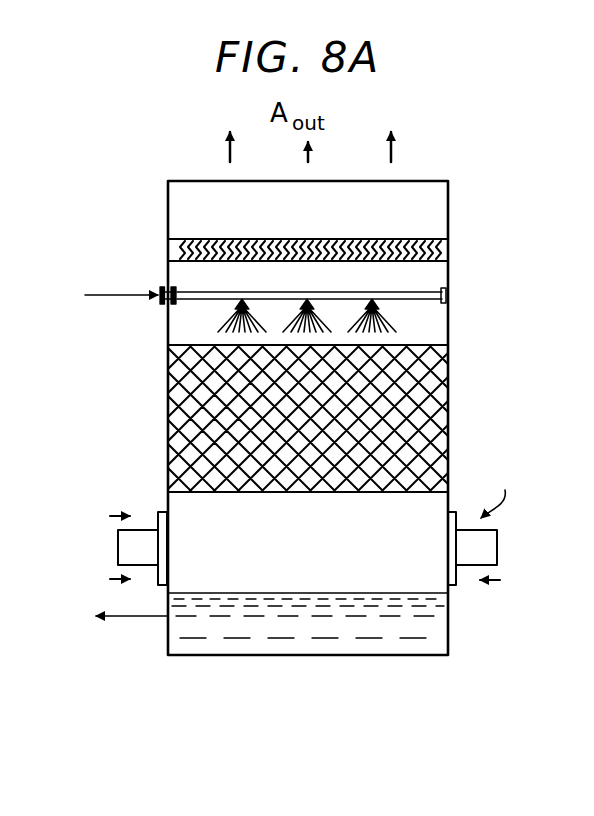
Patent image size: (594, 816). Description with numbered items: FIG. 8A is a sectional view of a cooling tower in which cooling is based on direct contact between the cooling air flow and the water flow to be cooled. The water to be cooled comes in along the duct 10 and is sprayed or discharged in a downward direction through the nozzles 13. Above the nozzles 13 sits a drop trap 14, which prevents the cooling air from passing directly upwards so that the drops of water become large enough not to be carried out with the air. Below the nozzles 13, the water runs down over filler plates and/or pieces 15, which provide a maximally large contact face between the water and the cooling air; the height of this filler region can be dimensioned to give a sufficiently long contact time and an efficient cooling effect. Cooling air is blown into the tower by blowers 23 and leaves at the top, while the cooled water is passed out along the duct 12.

The duct 10 is at (128, 296).
The duct 12 is at (136, 618).
The nozzles 13 is at (387, 318).
The drop trap 14 is at (430, 250).
The filler plates and/or pieces 15 is at (168, 408).
The blowers 23 is at (490, 550).